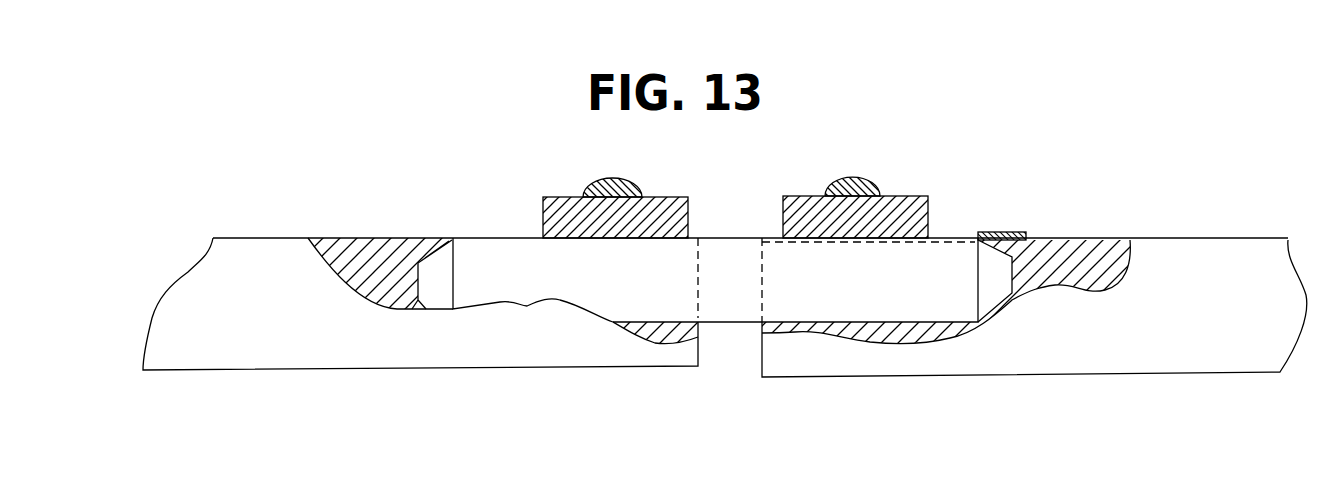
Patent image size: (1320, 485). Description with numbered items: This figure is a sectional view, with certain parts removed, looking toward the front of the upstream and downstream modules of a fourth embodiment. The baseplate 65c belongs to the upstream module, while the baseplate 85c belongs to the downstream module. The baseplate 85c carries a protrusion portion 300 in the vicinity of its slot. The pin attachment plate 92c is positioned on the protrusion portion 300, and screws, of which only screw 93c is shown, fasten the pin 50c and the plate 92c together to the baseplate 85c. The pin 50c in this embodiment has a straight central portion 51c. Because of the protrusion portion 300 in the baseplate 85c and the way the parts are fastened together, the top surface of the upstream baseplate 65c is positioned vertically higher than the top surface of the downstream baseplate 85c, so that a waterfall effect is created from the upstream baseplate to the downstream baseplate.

The baseplate 65c is at (368, 245).
The baseplate 85c is at (1113, 250).
The pin 50c is at (918, 288).
The straight central portion 51c is at (730, 312).
The pin attachment plate 92c is at (910, 194).
The screw 93c is at (855, 175).
The protrusion portion 300 is at (1008, 232).